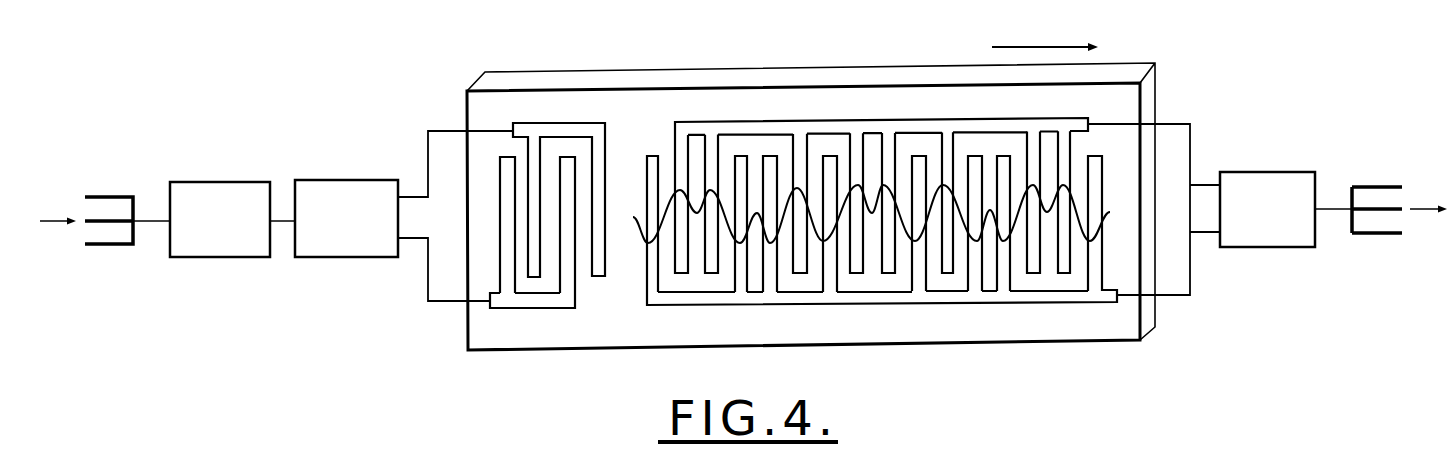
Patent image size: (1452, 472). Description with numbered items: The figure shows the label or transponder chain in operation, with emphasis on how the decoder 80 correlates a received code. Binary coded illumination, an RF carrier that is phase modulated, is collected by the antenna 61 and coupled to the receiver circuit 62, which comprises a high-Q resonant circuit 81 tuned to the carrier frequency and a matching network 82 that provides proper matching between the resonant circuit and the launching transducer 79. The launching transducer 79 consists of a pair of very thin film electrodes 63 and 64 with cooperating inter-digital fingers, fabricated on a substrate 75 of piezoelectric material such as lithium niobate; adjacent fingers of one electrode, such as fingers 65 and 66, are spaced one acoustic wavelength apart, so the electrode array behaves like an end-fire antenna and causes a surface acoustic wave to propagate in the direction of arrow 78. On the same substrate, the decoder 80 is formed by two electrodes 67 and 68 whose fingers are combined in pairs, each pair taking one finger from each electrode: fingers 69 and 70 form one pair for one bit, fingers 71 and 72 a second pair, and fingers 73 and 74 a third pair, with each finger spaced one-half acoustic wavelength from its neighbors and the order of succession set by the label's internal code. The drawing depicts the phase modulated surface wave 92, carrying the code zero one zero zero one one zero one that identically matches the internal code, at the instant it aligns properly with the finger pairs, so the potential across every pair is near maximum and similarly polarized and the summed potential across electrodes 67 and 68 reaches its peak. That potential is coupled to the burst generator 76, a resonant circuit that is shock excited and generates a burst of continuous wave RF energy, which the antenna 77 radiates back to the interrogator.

The antenna 61 is at (105, 244).
The receiver circuit 62 is at (284, 209).
The electrode 63 is at (518, 267).
The electrode 64 is at (557, 122).
The finger 65 is at (575, 288).
The finger 66 is at (503, 277).
The electrode 67 is at (863, 207).
The electrode 68 is at (870, 205).
The finger 69 is at (638, 170).
The finger 70 is at (675, 136).
The finger 71 is at (690, 274).
The finger 72 is at (722, 276).
The finger 73 is at (762, 160).
The finger 74 is at (793, 144).
The substrate 75 is at (1053, 343).
The burst generator 76 is at (1267, 172).
The antenna 77 is at (1371, 186).
The arrow 78 is at (1048, 46).
The launching transducer 79 is at (510, 208).
The decoder 80 is at (863, 203).
The resonant circuit 81 is at (220, 257).
The matching network 82 is at (345, 257).
The surface wave 92 is at (636, 213).